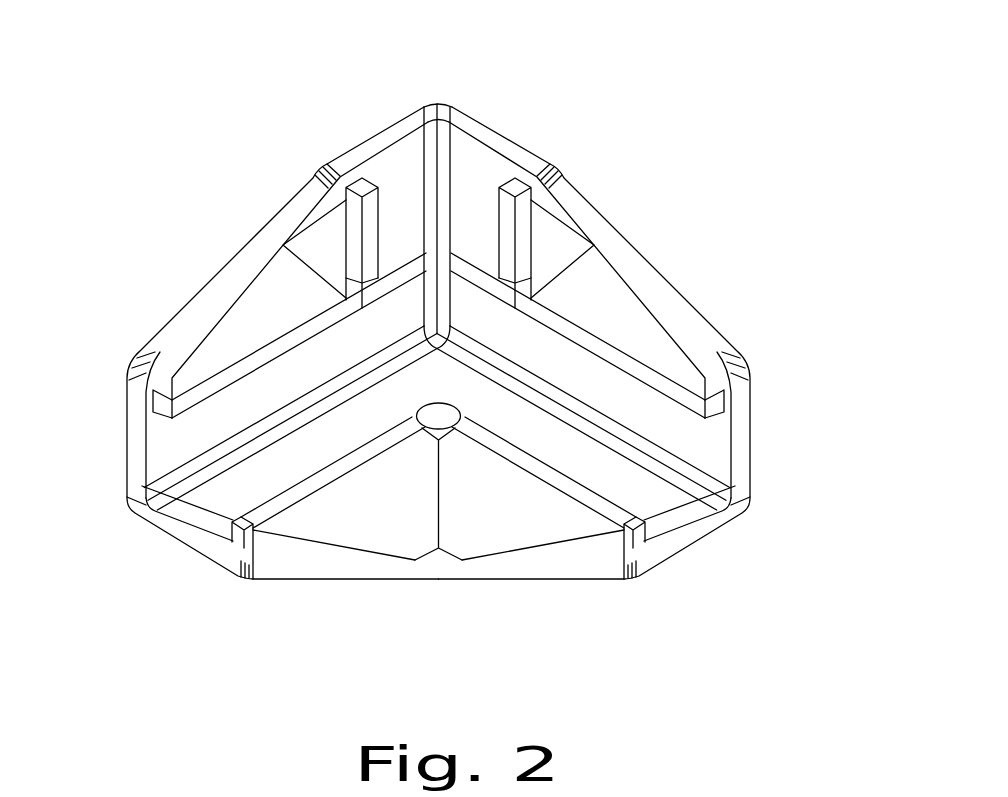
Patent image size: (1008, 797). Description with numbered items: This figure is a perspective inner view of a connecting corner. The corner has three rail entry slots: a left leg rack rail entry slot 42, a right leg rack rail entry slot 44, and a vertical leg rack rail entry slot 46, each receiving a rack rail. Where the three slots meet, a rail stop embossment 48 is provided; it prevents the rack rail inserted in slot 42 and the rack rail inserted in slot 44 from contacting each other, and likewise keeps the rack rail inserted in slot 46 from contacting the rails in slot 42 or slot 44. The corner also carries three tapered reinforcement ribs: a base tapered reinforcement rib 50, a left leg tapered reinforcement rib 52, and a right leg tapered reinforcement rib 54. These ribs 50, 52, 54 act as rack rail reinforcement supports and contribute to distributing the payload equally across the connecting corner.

The left leg rack rail entry slot 42 is at (720, 527).
The right leg rack rail entry slot 44 is at (170, 542).
The vertical leg rack rail entry slot 46 is at (437, 103).
The rail stop embossment 48 is at (425, 383).
The base tapered reinforcement rib 50 is at (393, 505).
The left leg tapered reinforcement rib 52 is at (582, 277).
The right leg tapered reinforcement rib 54 is at (302, 273).